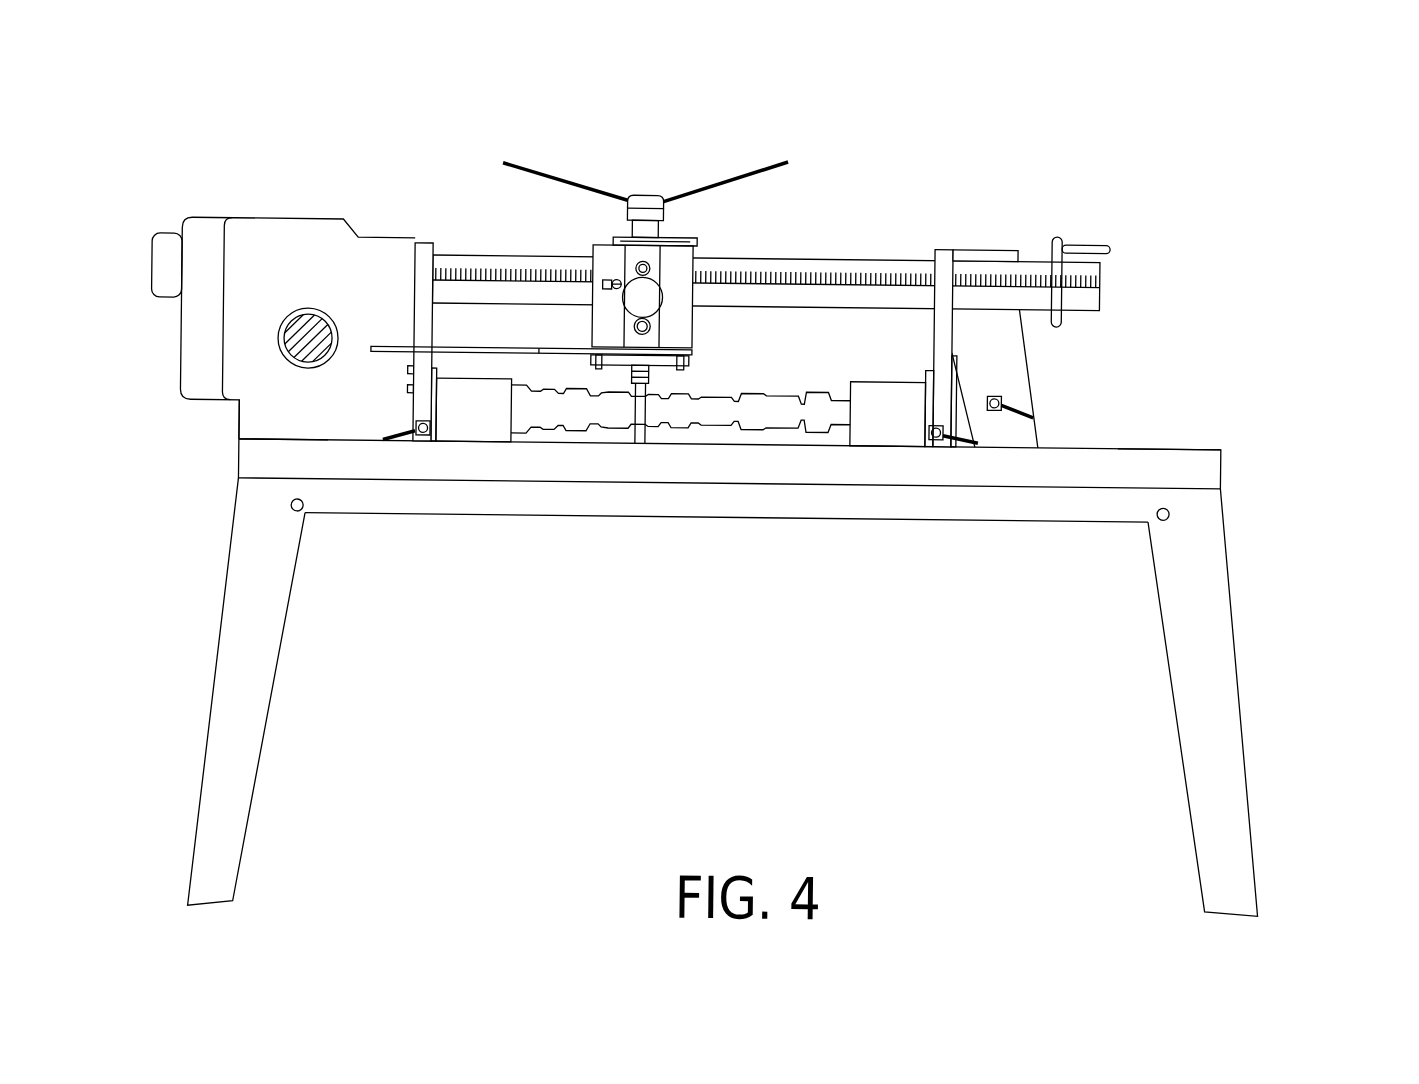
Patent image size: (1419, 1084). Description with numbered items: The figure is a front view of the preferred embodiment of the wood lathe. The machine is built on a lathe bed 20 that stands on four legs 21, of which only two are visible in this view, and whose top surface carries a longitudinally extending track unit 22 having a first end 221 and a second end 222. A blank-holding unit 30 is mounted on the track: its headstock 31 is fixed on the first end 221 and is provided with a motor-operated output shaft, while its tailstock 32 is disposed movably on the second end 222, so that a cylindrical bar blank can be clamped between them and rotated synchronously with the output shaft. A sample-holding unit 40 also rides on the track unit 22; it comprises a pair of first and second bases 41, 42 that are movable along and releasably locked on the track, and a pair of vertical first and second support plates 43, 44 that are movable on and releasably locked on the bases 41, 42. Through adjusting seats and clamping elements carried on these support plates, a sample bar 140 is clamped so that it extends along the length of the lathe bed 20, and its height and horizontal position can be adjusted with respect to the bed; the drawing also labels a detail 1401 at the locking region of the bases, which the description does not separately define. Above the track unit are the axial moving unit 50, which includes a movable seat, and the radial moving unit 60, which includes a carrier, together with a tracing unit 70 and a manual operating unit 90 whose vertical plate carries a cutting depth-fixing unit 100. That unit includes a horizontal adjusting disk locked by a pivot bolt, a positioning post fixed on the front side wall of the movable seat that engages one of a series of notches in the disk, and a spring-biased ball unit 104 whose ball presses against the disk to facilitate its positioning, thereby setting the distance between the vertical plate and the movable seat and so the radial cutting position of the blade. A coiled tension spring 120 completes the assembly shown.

The lathe bed 20 is at (1246, 557).
The legs 21 is at (1218, 667).
The track unit 22 is at (1199, 461).
The first end 221 is at (272, 440).
The second end 222 is at (1105, 438).
The blank-holding unit 30 is at (261, 218).
The headstock 31 is at (247, 230).
The tailstock 32 is at (1019, 361).
The sample-holding unit 40 is at (408, 405).
The first base 41 is at (391, 445).
The second base 42 is at (979, 443).
The first support plate 43 is at (422, 258).
The second support plate 44 is at (947, 244).
The axial moving unit 50 is at (699, 246).
The radial moving unit 60 is at (700, 427).
The tracing unit 70 is at (635, 437).
The manual operating unit 90 is at (526, 358).
The cutting depth-fixing unit 100 is at (616, 231).
The spring-biased ball unit 104 is at (600, 245).
The coiled tension spring 120 is at (617, 287).
The sample bar 140 is at (761, 440).
The clamp lock 1401 is at (429, 437).